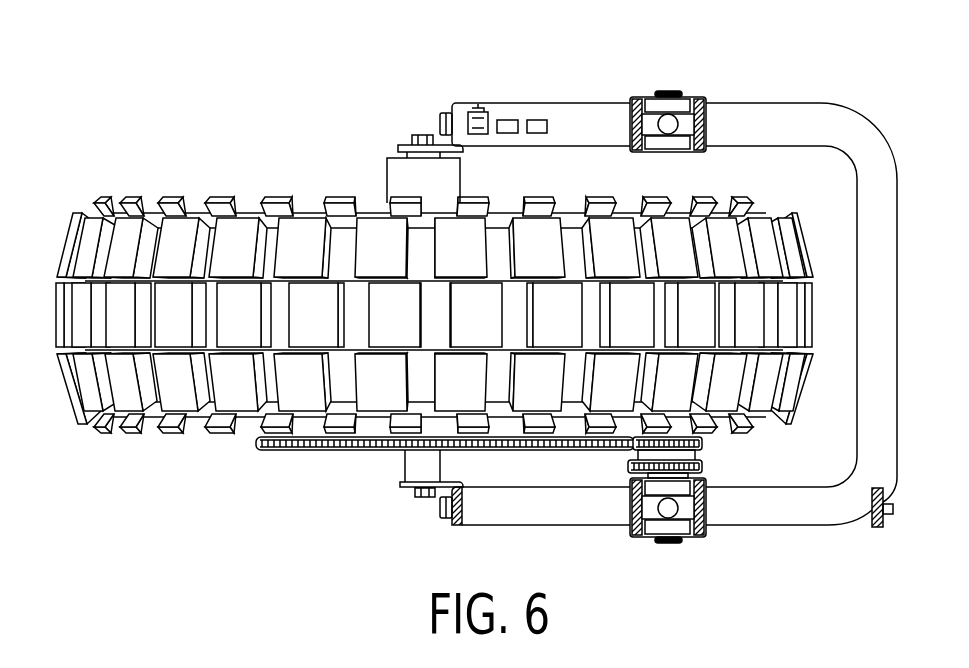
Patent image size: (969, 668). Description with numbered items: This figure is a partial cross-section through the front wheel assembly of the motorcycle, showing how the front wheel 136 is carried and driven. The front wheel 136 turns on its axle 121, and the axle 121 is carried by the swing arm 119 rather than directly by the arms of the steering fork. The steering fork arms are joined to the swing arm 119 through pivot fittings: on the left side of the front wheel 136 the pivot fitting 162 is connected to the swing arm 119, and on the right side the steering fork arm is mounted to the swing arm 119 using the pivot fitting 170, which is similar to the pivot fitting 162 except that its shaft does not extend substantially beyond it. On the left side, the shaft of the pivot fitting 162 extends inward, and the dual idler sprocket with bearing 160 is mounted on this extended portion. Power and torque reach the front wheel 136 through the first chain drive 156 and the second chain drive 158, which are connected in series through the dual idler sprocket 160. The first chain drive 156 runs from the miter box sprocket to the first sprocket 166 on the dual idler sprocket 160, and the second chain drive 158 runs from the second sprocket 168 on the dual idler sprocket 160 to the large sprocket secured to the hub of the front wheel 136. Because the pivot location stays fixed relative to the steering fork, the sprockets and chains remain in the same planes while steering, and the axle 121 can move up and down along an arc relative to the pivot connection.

The front wheel 136 is at (243, 238).
The swing arm 119 is at (865, 201).
The axle 121 is at (414, 466).
The second chain drive 158 is at (509, 452).
The first chain drive 156 is at (626, 464).
The dual idler sprocket with bearing 160 is at (697, 455).
The second sprocket 168 is at (702, 443).
The first sprocket 166 is at (708, 466).
The pivot fitting 162 is at (694, 540).
The pivot fitting 170 is at (704, 97).